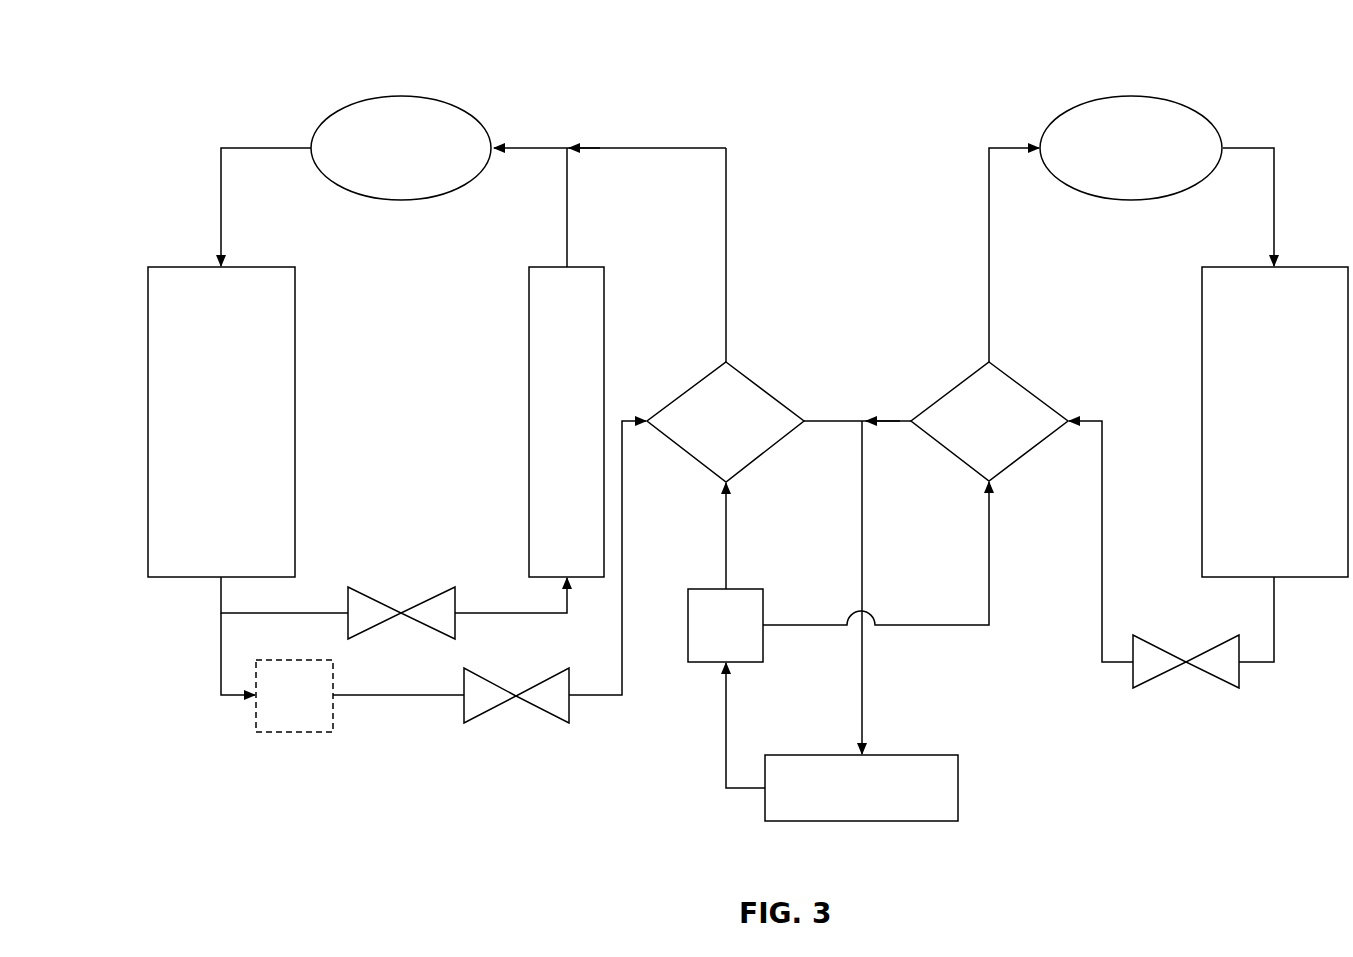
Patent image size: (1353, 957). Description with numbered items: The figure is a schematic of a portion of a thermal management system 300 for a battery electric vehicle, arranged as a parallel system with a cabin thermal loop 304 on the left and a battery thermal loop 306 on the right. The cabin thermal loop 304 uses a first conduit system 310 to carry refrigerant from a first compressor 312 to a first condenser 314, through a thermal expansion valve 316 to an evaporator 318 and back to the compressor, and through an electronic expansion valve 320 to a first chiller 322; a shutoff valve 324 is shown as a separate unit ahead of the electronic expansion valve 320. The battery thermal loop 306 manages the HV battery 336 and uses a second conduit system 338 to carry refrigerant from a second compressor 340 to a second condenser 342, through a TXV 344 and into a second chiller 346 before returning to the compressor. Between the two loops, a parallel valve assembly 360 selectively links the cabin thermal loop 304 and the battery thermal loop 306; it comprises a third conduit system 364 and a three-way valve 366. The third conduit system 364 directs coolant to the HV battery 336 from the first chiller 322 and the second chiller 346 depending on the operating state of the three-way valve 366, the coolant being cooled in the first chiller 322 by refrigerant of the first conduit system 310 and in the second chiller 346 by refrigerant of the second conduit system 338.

The thermal management system 300 is at (887, 38).
The cabin thermal loop 304 is at (541, 136).
The battery thermal loop 306 is at (1006, 137).
The first conduit system 310 is at (262, 140).
The first compressor 312 is at (455, 105).
The first condenser 314 is at (188, 266).
The thermal expansion valve (TXV) 316 is at (456, 600).
The evaporator 318 is at (583, 267).
The electronic expansion valve (EXV) 320 is at (570, 705).
The first chiller 322 is at (766, 388).
The shutoff valve 324 is at (295, 733).
The HV battery 336 is at (960, 787).
The second conduit system 338 is at (1250, 140).
The second compressor 340 is at (1186, 105).
The second condenser 342 is at (1245, 267).
The TXV 344 is at (1240, 676).
The second chiller 346 is at (1031, 390).
The parallel valve assembly 360 is at (855, 292).
The third conduit system 364 is at (836, 418).
The three-way valve 366 is at (745, 590).